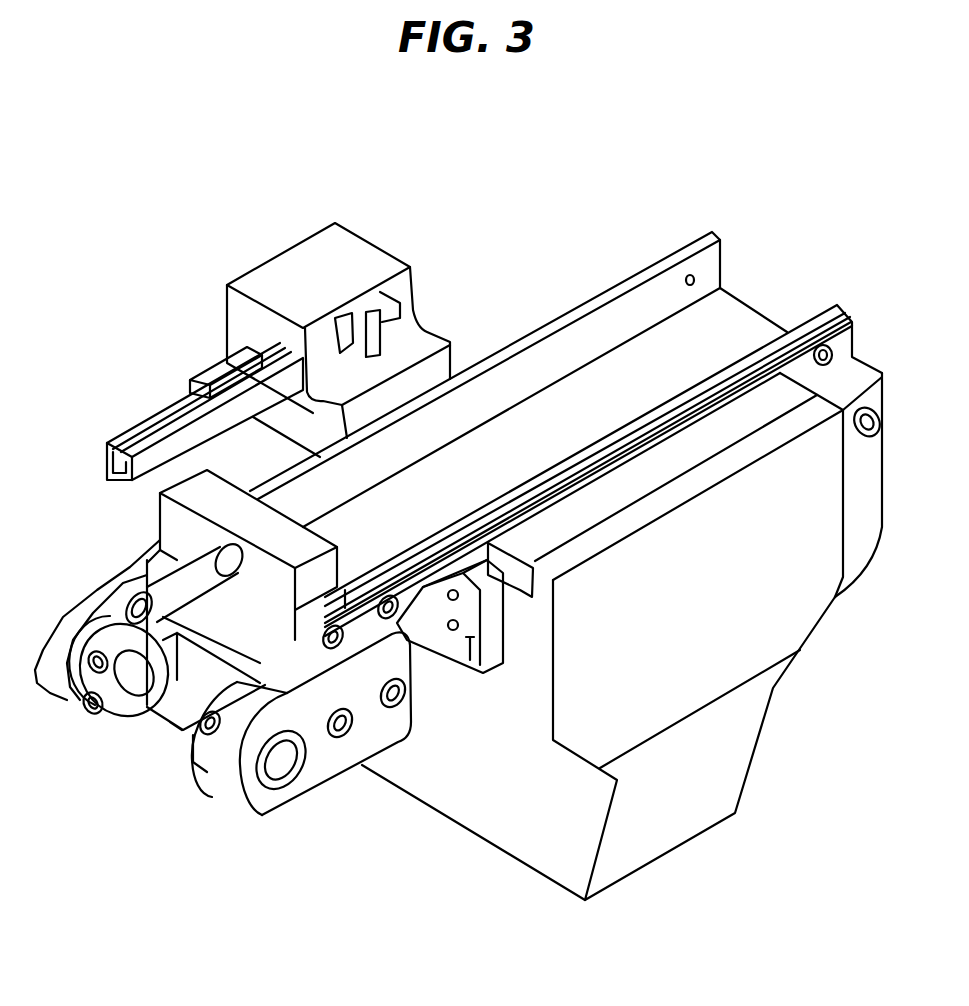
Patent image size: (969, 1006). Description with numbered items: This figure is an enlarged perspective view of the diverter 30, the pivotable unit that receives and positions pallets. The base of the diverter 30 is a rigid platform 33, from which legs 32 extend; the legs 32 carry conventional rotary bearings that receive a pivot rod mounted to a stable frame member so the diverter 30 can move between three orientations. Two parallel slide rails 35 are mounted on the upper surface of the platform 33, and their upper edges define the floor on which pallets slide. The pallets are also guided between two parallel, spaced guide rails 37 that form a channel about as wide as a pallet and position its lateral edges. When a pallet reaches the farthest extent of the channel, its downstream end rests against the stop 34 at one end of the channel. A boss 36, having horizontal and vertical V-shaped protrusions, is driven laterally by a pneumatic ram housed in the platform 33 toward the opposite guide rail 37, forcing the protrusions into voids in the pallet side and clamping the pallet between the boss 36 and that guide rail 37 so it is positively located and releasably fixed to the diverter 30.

The diverter 30 is at (536, 268).
The legs 32 is at (52, 700).
The platform 33 is at (783, 624).
The stop 34 is at (238, 512).
The slide rails 35 is at (843, 305).
The boss 36 is at (370, 310).
The guide rails 37 is at (537, 537).